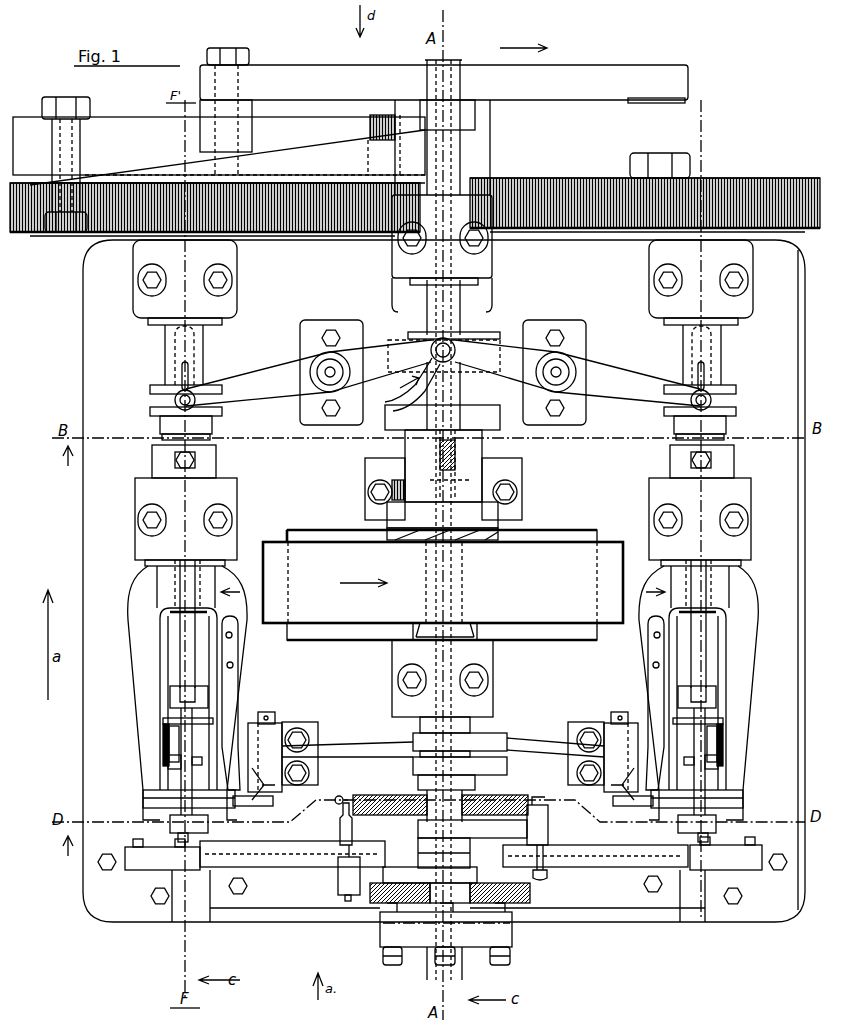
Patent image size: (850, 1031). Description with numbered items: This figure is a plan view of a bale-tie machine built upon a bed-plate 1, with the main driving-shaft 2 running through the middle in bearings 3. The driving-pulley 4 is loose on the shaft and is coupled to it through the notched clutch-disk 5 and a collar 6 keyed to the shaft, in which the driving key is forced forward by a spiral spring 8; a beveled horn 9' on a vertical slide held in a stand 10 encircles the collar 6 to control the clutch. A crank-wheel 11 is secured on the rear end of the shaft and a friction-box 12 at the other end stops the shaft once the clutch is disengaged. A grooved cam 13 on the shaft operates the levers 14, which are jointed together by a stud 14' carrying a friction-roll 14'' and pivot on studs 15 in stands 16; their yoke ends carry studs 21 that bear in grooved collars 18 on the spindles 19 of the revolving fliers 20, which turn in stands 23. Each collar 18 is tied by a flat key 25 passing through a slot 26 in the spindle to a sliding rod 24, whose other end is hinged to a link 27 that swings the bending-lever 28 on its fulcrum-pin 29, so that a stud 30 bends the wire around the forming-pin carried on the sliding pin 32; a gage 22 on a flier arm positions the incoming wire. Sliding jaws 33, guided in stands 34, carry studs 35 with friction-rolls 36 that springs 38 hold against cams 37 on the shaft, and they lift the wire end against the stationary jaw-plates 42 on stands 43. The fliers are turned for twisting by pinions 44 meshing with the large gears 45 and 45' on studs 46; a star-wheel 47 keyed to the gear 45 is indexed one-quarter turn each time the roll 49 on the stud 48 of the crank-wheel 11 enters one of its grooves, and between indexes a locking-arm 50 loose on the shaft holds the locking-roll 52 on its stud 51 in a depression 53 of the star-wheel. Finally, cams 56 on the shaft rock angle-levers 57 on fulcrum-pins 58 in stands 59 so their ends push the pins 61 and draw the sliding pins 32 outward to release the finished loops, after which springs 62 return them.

The bed-plate 1 is at (444, 581).
The main driving-shaft 2 is at (448, 62).
The bearings 3 is at (435, 464).
The driving-pulley 4 is at (443, 585).
The clutch-disk 5 is at (500, 535).
The collar 6 is at (478, 448).
The spiral spring 8 is at (438, 448).
The horn 9' is at (385, 489).
The stand 10 is at (502, 489).
The crank-wheel 11 is at (388, 89).
The friction-box 12 is at (430, 945).
The cam 13 is at (470, 333).
The levers 14 is at (443, 373).
The stud 14' is at (460, 350).
The friction-roll 14'' is at (444, 373).
The studs 15 is at (336, 368).
The stands 16 is at (443, 372).
The grooved collars 18 is at (150, 410).
The spindles 19 is at (206, 348).
The revolving fliers 20 is at (128, 593).
The studs 21 is at (198, 398).
The gage 22 is at (163, 720).
The stands 23 is at (230, 262).
The sliding rod 24 is at (178, 640).
The flat key 25 is at (214, 422).
The slot 26 is at (180, 376).
The link 27 is at (192, 750).
The bending-lever 28 is at (725, 778).
The fulcrum-pin 29 is at (763, 797).
The stud 30 is at (443, 761).
The sliding pin 32 is at (443, 809).
The sliding jaws 33 is at (296, 858).
The stands 34 is at (445, 879).
The studs 35 is at (342, 870).
The friction-rolls 36 is at (338, 872).
The cams 37 is at (455, 851).
The spiral springs 38 is at (441, 849).
The stationary jaw-plates 42 is at (448, 853).
The stands 43 is at (442, 879).
The pinions 44 is at (175, 195).
The gear 45 is at (212, 247).
The gear 45' is at (647, 241).
The studs 46 is at (660, 153).
The star-wheel 47 is at (219, 146).
The stud 48 is at (228, 50).
The roll 49 is at (226, 126).
The locking-arm 50 is at (227, 157).
The stud 51 is at (66, 147).
The locking-roll 52 is at (88, 156).
The depression 53 is at (370, 128).
The cams 56 is at (460, 761).
The angle-levers 57 is at (350, 758).
The fulcrum-pins 58 is at (268, 712).
The stands 59 is at (305, 723).
The pin 61 is at (443, 788).
The springs 62 is at (238, 690).